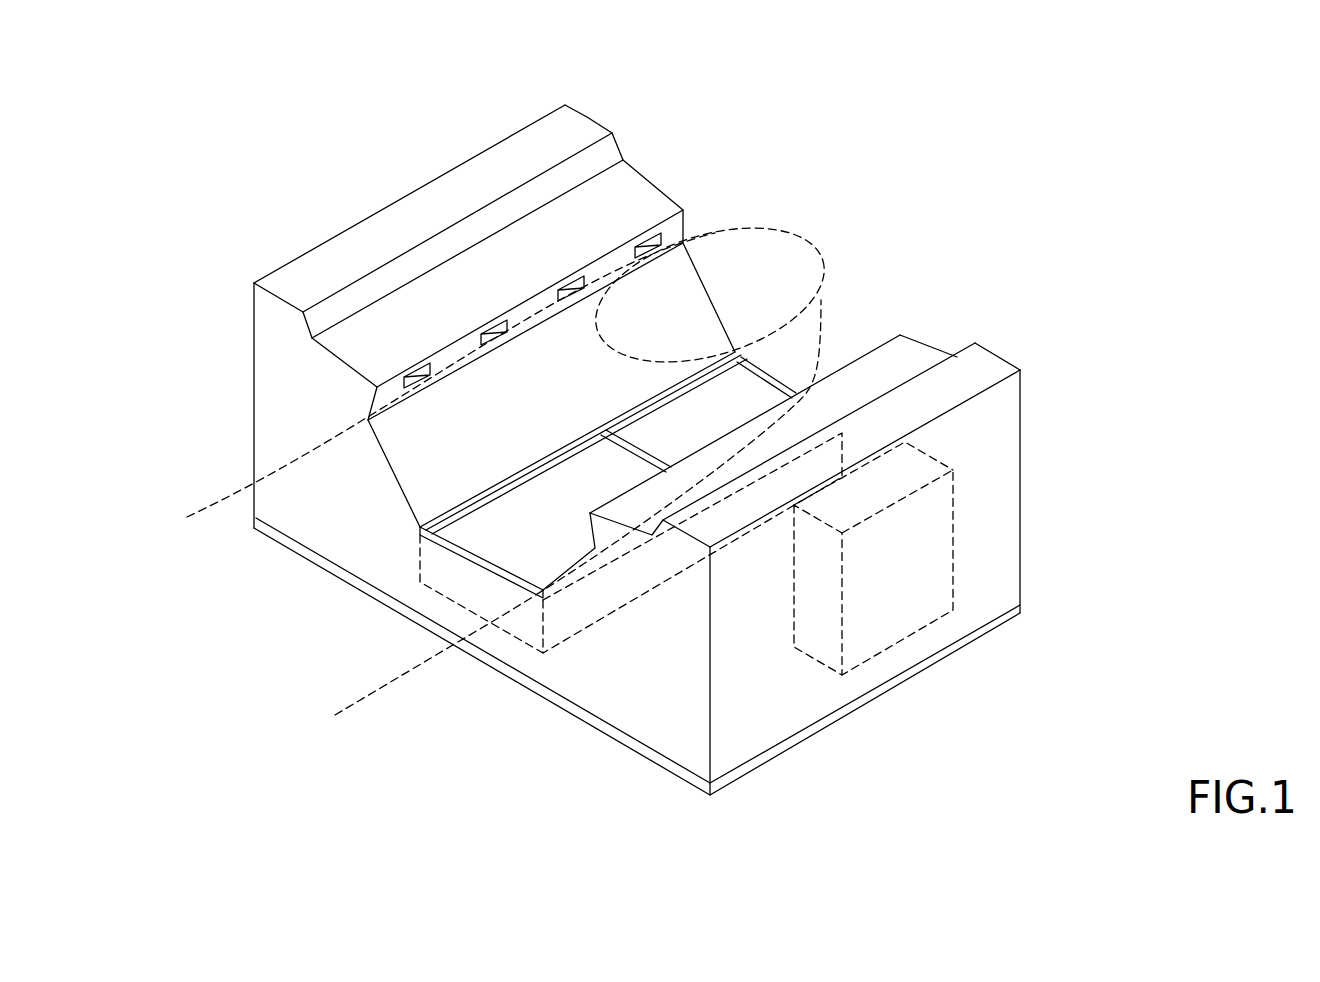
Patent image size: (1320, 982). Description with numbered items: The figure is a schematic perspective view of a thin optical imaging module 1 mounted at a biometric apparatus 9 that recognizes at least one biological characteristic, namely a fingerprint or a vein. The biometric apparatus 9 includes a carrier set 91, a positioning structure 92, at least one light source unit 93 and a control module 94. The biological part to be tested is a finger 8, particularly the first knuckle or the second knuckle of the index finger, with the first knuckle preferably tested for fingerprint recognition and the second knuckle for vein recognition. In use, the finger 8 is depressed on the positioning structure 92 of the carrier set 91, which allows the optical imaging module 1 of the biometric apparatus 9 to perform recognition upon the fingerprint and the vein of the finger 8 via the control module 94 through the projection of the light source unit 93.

The thin optical imaging module 1 is at (573, 638).
The finger 8 is at (228, 496).
The biometric apparatus 9 is at (370, 168).
The carrier set 91 is at (997, 450).
The positioning structure 92 is at (558, 462).
The light source unit 93 is at (480, 331).
The control module 94 is at (858, 663).